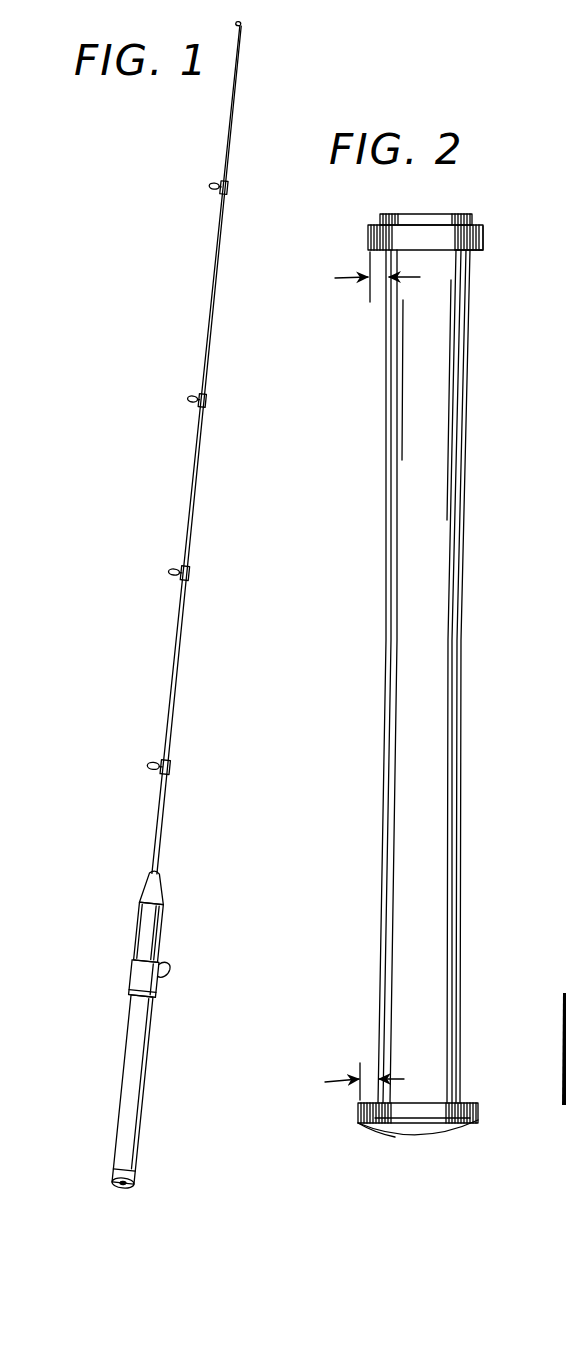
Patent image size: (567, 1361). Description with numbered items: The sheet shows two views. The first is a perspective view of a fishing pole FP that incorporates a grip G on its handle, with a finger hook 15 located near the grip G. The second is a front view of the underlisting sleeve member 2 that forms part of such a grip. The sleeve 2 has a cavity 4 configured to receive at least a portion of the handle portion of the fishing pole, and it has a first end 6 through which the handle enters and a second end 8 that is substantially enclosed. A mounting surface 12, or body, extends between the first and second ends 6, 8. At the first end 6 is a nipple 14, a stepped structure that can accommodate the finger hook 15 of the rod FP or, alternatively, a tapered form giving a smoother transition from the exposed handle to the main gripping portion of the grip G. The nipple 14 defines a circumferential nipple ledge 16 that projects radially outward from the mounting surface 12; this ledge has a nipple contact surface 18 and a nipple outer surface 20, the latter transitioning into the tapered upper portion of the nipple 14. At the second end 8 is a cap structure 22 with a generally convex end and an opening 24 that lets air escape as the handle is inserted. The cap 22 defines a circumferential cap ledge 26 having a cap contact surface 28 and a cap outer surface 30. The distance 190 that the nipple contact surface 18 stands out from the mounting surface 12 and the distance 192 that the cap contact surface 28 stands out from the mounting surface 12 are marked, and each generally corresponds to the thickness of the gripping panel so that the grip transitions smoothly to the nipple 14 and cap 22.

In FIG. 1, the fishing pole FP is at (168, 545).
In FIG. 1, the grip G is at (116, 1077).
In FIG. 1, the finger hook 15 is at (166, 974).
In FIG. 2, the underlisting sleeve member 2 is at (392, 676).
In FIG. 2, the cavity 4 is at (426, 214).
In FIG. 2, the first end 6 is at (354, 264).
In FIG. 2, the second end 8 is at (334, 1100).
In FIG. 2, the mounting surface 12 is at (385, 657).
In FIG. 2, the nipple 14 is at (485, 221).
In FIG. 2, the nipple ledge 16 is at (372, 221).
In FIG. 2, the nipple contact surface 18 is at (483, 252).
In FIG. 2, the nipple outer surface 20 is at (488, 237).
In FIG. 2, the cap structure 22 is at (470, 1134).
In FIG. 2, the opening 24 is at (419, 1136).
In FIG. 2, the cap ledge 26 is at (376, 1146).
In FIG. 2, the cap contact surface 28 is at (464, 1101).
In FIG. 2, the cap outer surface 30 is at (357, 1111).
In FIG. 2, the distance the nipple contact surface extends from the mounting surface 190 is at (375, 298).
In FIG. 2, the distance the cap contact surface extends from the mounting surface 192 is at (365, 1062).